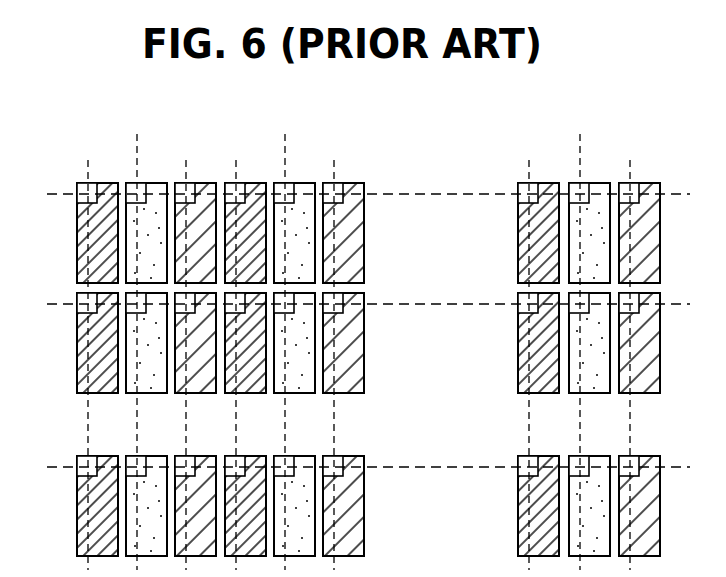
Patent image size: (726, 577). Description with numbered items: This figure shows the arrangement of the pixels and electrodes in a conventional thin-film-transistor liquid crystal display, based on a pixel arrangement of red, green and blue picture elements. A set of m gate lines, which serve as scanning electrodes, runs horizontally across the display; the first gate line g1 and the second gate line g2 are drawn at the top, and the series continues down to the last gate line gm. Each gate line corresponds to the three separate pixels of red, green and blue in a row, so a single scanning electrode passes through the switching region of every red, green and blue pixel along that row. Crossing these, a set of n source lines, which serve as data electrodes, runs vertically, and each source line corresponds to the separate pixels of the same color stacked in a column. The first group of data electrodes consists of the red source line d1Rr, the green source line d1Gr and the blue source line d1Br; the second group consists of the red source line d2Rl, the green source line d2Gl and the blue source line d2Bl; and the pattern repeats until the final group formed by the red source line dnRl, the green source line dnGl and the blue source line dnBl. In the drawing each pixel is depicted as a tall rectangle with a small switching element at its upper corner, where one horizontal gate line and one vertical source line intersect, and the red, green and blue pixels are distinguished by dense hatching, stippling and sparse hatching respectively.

The gate line g1 is at (353, 193).
The gate line g2 is at (353, 303).
The gate line gm is at (352, 466).
The source line d1Rr is at (91, 353).
The source line d1Gr is at (136, 339).
The source line d1Br is at (182, 353).
The source line d2Rl is at (244, 353).
The source line d2Gl is at (286, 339).
The source line d2Bl is at (334, 353).
The source line dnRl is at (527, 354).
The source line dnGl is at (580, 341).
The source line dnBl is at (629, 354).